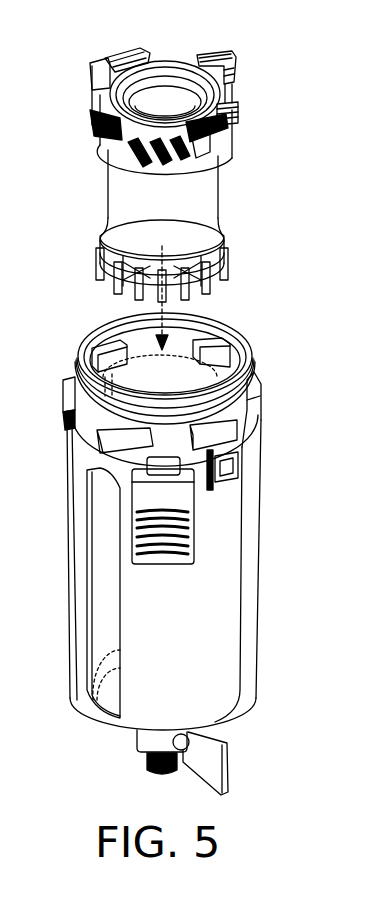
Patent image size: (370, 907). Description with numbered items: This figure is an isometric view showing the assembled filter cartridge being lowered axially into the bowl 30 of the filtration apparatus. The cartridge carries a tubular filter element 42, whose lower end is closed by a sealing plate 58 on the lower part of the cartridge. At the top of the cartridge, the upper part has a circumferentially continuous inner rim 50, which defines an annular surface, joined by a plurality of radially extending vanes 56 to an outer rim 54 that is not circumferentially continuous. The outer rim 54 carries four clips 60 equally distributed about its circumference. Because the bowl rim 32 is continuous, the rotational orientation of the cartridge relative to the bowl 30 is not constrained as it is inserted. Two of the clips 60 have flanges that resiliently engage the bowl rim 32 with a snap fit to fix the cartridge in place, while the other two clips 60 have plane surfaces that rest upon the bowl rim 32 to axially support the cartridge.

The bowl 30 is at (67, 575).
The bowl rim 32 is at (78, 354).
The filter element 42 is at (107, 172).
The inner rim 50 is at (112, 80).
The outer rim 54 is at (143, 58).
The radially extending vanes 56 is at (160, 150).
The sealing plate 58 is at (102, 230).
The clips 60 is at (237, 72).